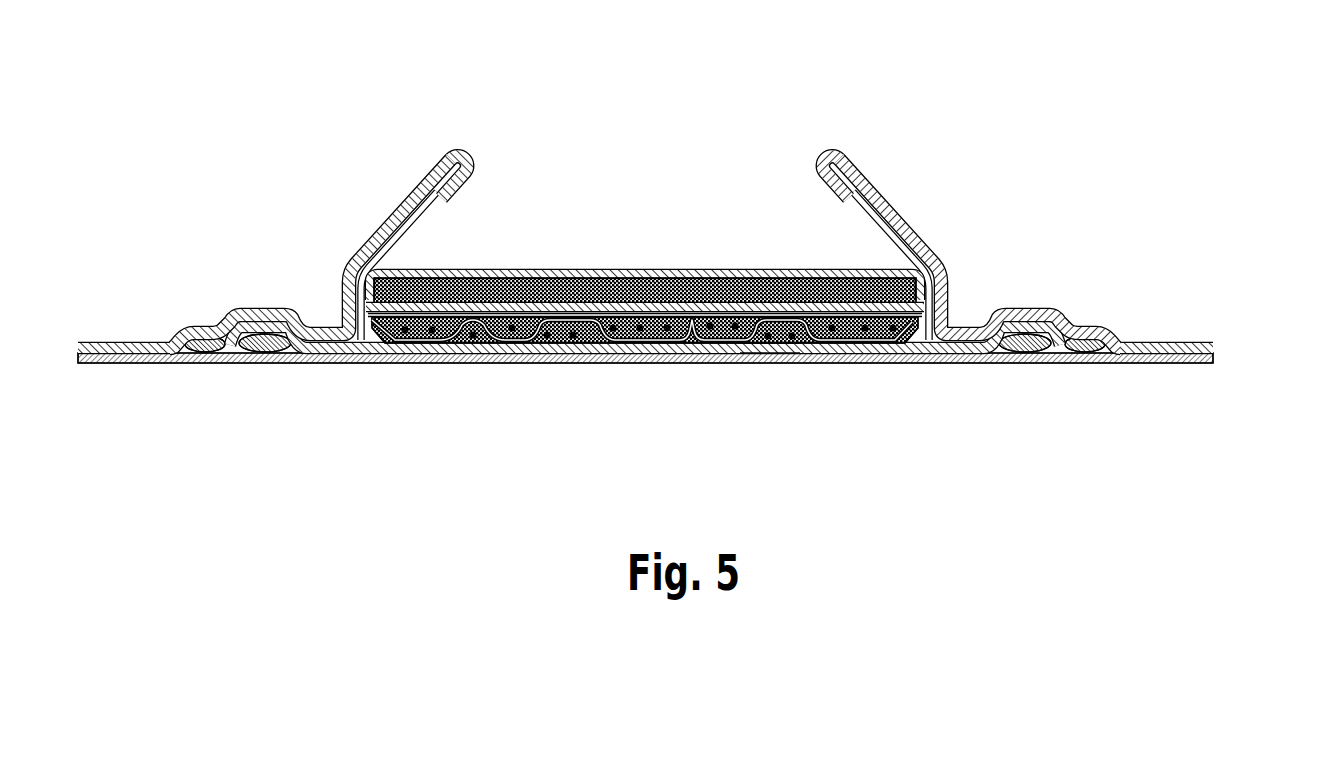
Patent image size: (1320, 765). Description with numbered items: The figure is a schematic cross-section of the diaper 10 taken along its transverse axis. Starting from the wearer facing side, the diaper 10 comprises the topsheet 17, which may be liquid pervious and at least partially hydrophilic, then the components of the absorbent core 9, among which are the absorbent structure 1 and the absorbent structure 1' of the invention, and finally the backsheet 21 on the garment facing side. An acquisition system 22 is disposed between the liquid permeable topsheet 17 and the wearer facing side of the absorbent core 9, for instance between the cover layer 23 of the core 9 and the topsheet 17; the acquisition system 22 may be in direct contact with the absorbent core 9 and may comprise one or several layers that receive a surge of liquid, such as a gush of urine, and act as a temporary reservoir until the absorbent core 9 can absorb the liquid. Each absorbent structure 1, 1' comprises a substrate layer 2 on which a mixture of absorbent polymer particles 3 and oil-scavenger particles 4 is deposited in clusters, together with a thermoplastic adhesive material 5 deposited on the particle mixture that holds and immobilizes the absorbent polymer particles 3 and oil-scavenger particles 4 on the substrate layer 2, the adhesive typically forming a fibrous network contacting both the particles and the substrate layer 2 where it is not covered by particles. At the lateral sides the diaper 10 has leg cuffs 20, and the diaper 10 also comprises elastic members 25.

The absorbent structure 1 is at (645, 391).
The absorbent structure 1' is at (770, 399).
The substrate layer 2 is at (634, 300).
The absorbent polymer particles 3 is at (818, 305).
The oil-scavenger particles 4 is at (718, 326).
The thermoplastic adhesive material 5 is at (475, 322).
The absorbent core 9 is at (1217, 355).
The diaper 10 is at (972, 152).
The topsheet 17 is at (572, 272).
The leg cuffs 20 is at (437, 168).
The backsheet 21 is at (533, 362).
The acquisition system 22 is at (953, 270).
The cover layer 23 is at (532, 307).
The elastic members 25 is at (242, 362).